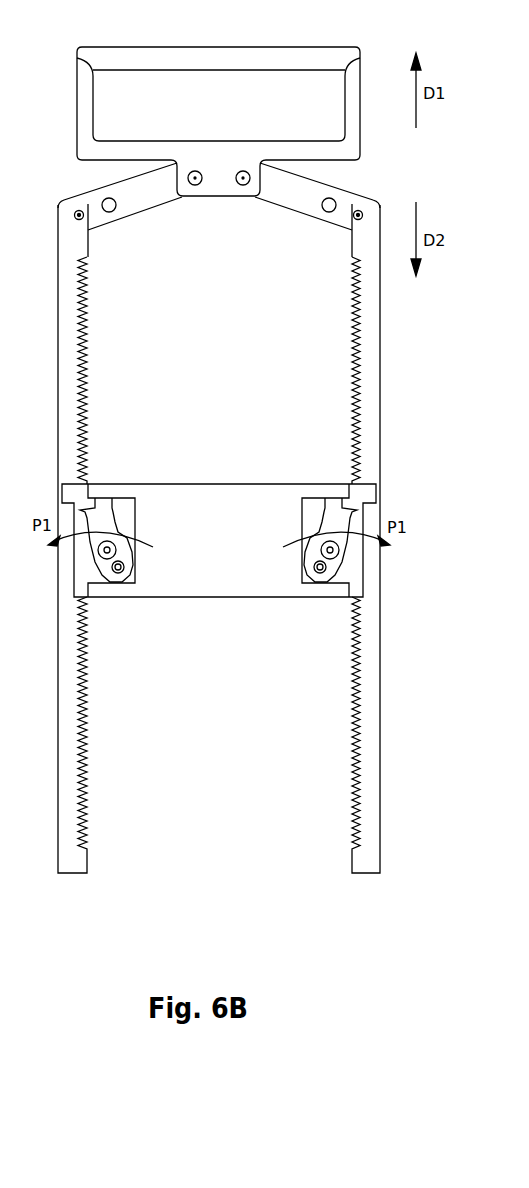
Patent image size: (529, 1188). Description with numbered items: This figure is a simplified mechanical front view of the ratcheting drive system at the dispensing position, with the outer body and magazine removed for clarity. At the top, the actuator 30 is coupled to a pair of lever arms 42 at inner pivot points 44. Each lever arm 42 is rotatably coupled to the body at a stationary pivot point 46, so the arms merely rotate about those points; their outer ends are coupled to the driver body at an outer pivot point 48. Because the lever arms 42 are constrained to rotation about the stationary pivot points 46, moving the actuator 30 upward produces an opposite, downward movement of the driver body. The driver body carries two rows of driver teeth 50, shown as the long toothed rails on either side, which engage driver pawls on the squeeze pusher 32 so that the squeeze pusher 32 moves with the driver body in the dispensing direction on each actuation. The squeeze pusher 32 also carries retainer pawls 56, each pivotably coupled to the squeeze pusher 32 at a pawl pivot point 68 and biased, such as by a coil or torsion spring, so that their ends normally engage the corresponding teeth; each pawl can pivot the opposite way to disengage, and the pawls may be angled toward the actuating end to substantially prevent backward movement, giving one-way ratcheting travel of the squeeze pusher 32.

The actuator 30 is at (237, 46).
The squeeze pusher 32 is at (219, 540).
The lever arms 42 is at (147, 190).
The inner pivot points 44 is at (197, 186).
The stationary pivot points 46 is at (109, 213).
The outer pivot point 48 is at (74, 214).
The driver teeth 50 is at (88, 430).
The retainer pawls 56 is at (107, 525).
The pawl pivot point 68 is at (108, 580).